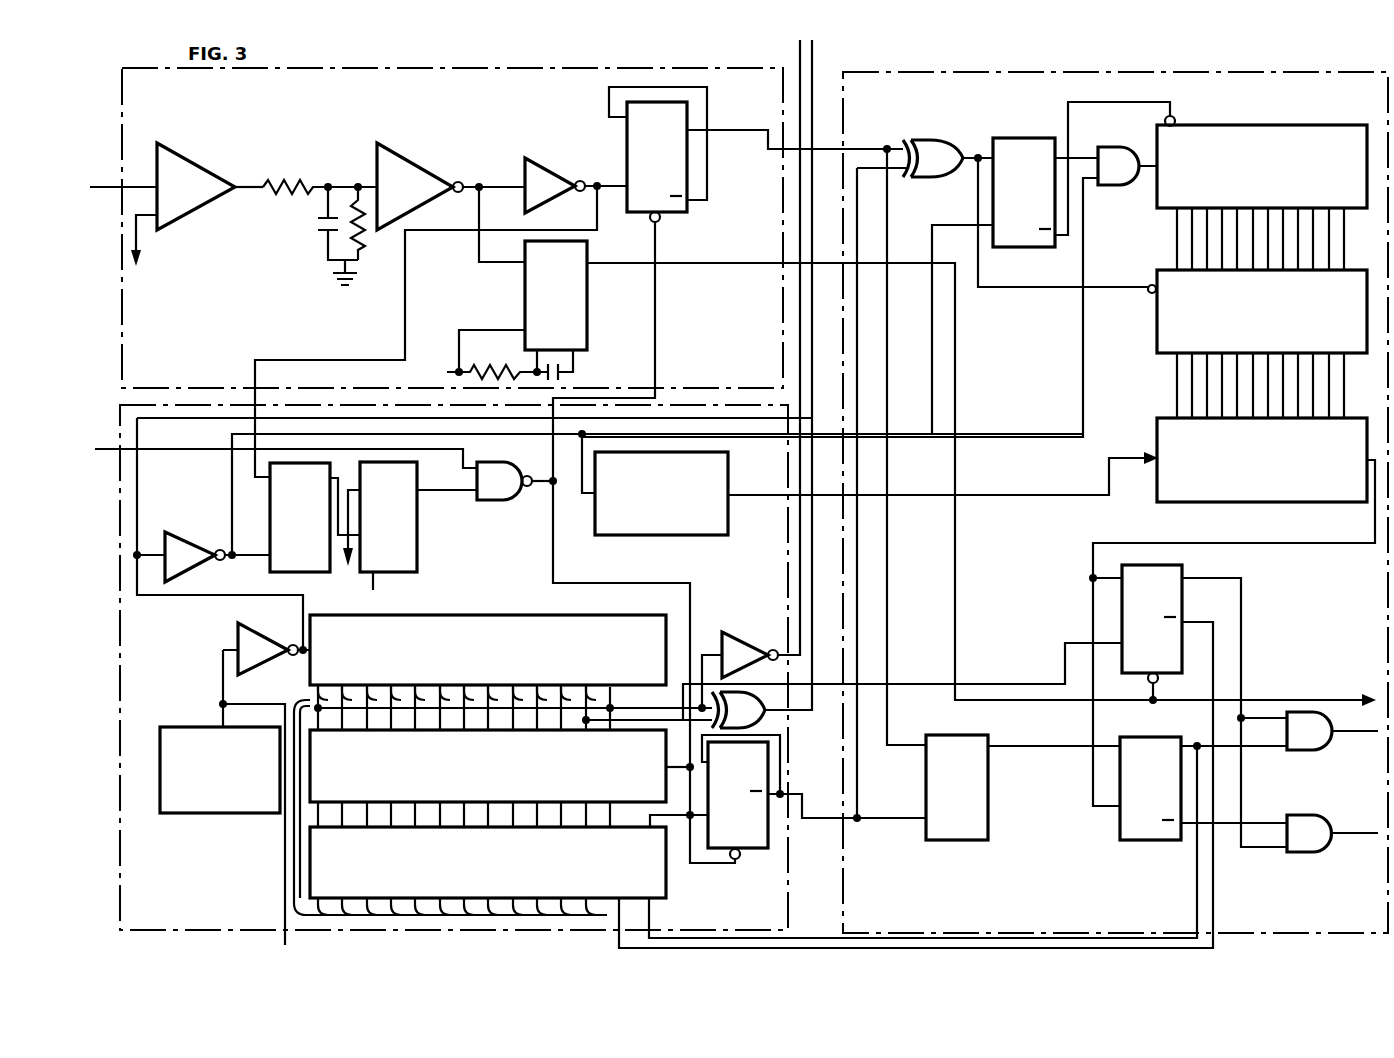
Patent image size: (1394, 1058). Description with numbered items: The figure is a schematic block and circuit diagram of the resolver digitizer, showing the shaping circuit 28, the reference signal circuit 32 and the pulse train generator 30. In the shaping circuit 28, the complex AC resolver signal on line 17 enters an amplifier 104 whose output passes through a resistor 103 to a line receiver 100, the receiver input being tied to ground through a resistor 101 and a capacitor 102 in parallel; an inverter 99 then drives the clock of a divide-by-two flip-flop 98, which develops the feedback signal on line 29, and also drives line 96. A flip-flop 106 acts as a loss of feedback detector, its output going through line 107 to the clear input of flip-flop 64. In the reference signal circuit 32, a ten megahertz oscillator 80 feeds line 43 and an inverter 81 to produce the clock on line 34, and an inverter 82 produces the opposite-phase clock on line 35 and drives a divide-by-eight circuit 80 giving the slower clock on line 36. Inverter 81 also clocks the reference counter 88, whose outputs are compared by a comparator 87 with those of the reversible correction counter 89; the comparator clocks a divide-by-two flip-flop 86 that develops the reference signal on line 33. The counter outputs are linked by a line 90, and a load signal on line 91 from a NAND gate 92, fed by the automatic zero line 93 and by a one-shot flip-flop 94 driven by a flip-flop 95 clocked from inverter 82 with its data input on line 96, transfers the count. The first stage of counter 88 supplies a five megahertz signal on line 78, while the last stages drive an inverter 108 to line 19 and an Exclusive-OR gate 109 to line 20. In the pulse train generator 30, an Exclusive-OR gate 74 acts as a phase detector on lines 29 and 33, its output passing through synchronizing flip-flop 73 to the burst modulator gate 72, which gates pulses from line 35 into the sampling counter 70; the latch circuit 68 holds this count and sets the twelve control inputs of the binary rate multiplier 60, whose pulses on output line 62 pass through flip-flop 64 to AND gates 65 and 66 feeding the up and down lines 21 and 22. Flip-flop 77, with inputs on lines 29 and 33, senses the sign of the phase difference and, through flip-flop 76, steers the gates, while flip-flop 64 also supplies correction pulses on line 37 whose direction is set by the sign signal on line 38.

The line 17 is at (134, 170).
The amplifier 104 is at (200, 177).
The resistor 103 is at (298, 180).
The capacitor 102 is at (318, 232).
The resistor 101 is at (362, 240).
The line receiver 100 is at (418, 175).
The inverter 99 is at (548, 178).
The flip-flop 98 is at (680, 215).
The line 96 is at (405, 295).
The line 91 is at (655, 350).
The line 29 is at (826, 149).
The flip-flop 106 is at (587, 316).
The line 107 is at (695, 265).
The shaping circuit 28 is at (540, 68).
The line 19 is at (800, 58).
The line 20 is at (812, 58).
The Exclusive-OR gate 74 is at (930, 140).
The D-type flip-flop 73 is at (1015, 138).
The gate 72 is at (1110, 150).
The sampling counter 70 is at (1284, 128).
The latch circuit 68 is at (1157, 327).
The pulse train generator 30 is at (1140, 72).
The binary rate multiplier 60 is at (1320, 496).
The output line 62 is at (1310, 543).
The flip-flop 64 is at (1182, 604).
The line 78 is at (985, 684).
The D-type flip-flop 76 is at (1148, 740).
The D-type flip-flop 77 is at (990, 737).
The line 21 is at (1340, 731).
The AND gate 65 is at (1293, 750).
The line 22 is at (1340, 833).
The AND gate 66 is at (1316, 852).
The line 33 is at (830, 818).
The D-type flip-flop 86 is at (768, 840).
The line 37 is at (960, 948).
The line 38 is at (1082, 938).
The line 34 is at (150, 595).
The line 35 is at (232, 490).
The line 36 is at (812, 495).
The inverter 82 is at (178, 542).
The D-type flip-flop 95 is at (318, 572).
The flip-flop 94 is at (417, 535).
The NAND gate 92 is at (498, 500).
The oscillator 80 is at (680, 525).
The reference counter 88 is at (440, 618).
The inverter 81 is at (262, 640).
The inverter 108 is at (740, 640).
The Exclusive-OR gate 109 is at (738, 692).
The comparator 87 is at (312, 790).
The line 90 is at (294, 840).
The phase correction counter 89 is at (312, 868).
The line 43 is at (284, 890).
The reference signal circuit 32 is at (120, 872).
The line 93 is at (110, 449).